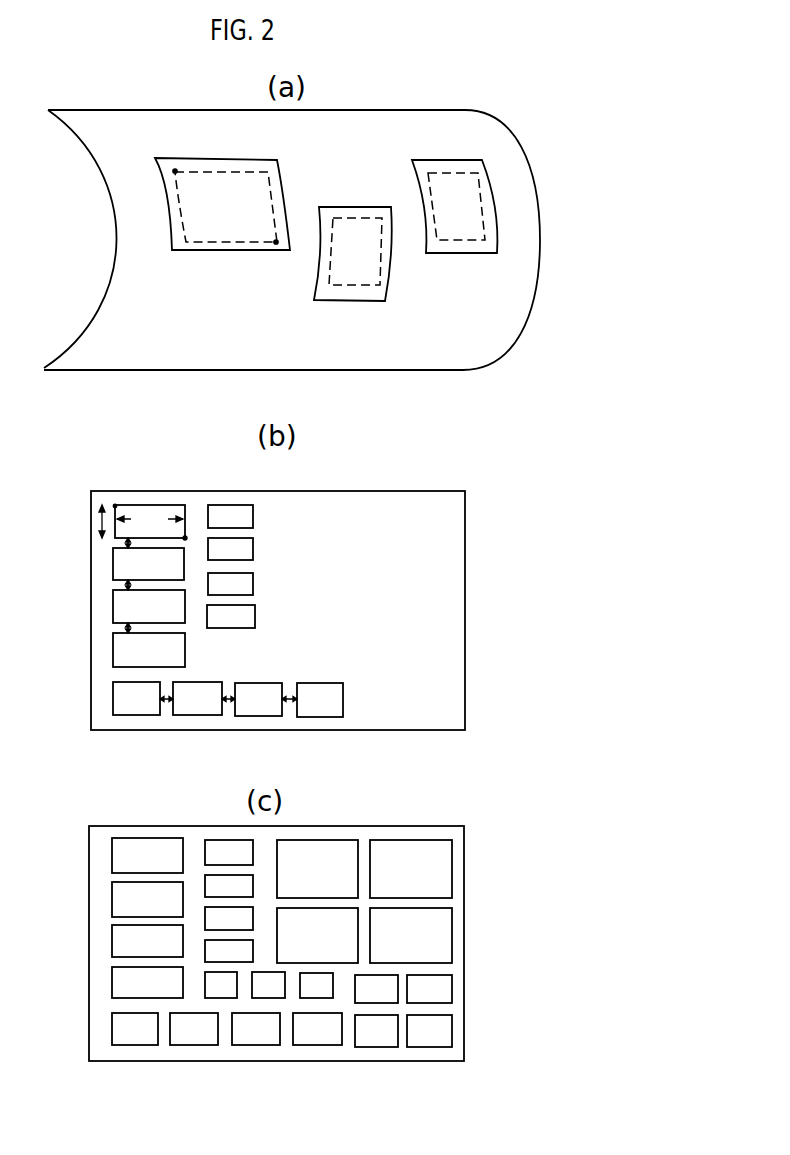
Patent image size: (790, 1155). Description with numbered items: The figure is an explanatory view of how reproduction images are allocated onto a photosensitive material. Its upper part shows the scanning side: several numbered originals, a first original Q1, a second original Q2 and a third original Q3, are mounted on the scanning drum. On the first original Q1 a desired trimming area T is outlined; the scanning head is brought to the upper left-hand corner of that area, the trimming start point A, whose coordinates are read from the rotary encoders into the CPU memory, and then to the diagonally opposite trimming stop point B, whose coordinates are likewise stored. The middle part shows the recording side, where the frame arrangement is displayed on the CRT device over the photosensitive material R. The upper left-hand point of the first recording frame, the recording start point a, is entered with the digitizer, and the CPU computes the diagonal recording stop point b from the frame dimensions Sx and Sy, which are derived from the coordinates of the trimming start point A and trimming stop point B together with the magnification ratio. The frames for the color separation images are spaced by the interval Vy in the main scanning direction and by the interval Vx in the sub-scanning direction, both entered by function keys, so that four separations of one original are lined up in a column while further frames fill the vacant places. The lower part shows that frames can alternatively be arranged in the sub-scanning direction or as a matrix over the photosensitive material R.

The first original Q1 is at (178, 226).
The second original Q2 is at (345, 216).
The third original Q3 is at (468, 246).
The trimming area T is at (275, 191).
The trimming start point A is at (175, 170).
The trimming stop point B is at (276, 242).
The photosensitive material R is at (395, 503).
The recording start point a is at (115, 506).
The recording stop point b is at (185, 538).
The frame dimension in sub-scanning direction Sx is at (150, 520).
The frame dimension in main scanning direction Sy is at (100, 521).
The interval relative to the sub-scanning direction Vx is at (168, 701).
The interval relative to the main scanning direction Vy is at (128, 543).